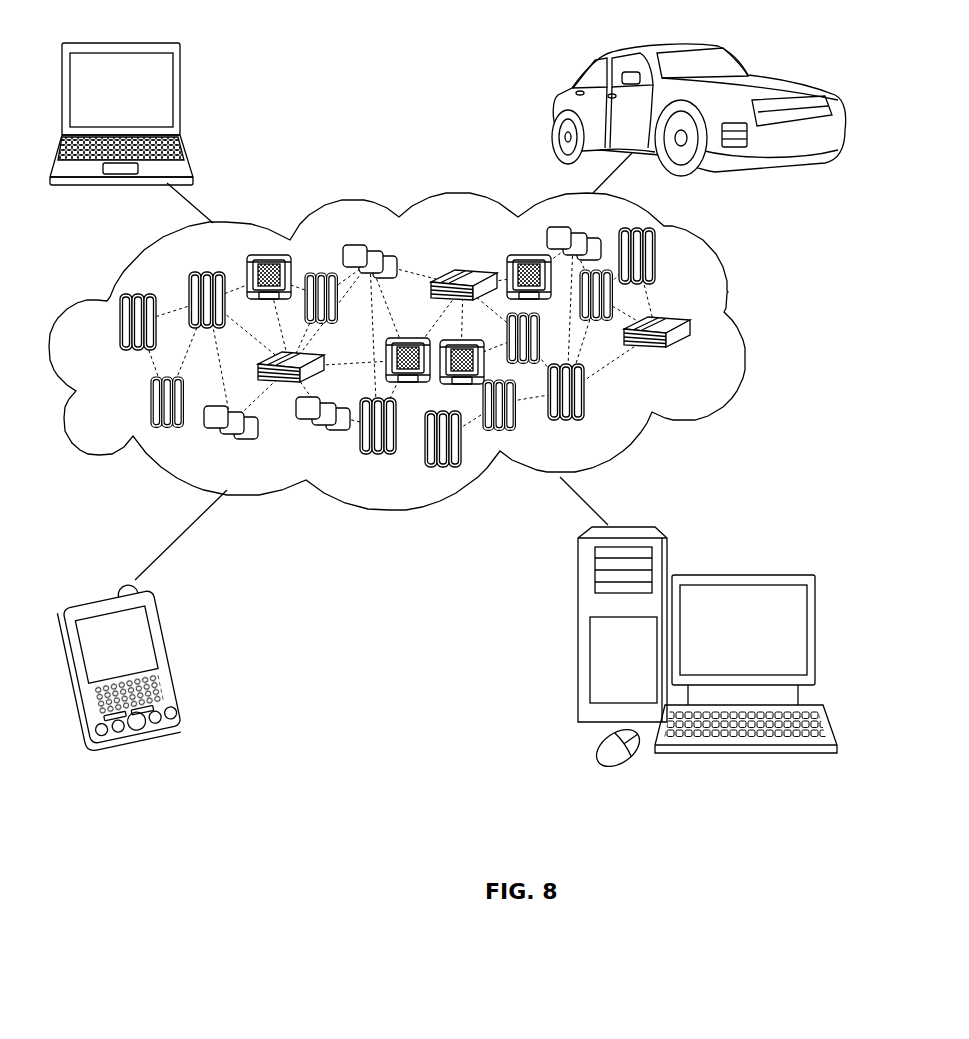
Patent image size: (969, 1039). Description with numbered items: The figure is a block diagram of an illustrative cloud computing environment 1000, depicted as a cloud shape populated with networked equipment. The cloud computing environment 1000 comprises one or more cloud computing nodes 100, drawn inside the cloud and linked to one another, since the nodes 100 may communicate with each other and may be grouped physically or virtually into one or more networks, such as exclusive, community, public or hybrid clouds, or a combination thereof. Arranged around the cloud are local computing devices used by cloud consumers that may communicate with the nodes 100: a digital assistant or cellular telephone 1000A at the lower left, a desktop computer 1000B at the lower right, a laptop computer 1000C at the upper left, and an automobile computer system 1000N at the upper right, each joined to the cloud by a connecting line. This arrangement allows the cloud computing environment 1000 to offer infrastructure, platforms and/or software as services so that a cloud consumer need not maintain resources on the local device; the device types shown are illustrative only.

The cloud computing environment 1000 is at (747, 317).
The cloud computing nodes 100 is at (704, 361).
The digital assistant (PDA) or cellular telephone 1000A is at (174, 653).
The desktop computer 1000B is at (750, 558).
The laptop computer 1000C is at (183, 96).
The automobile computer system 1000N is at (555, 108).